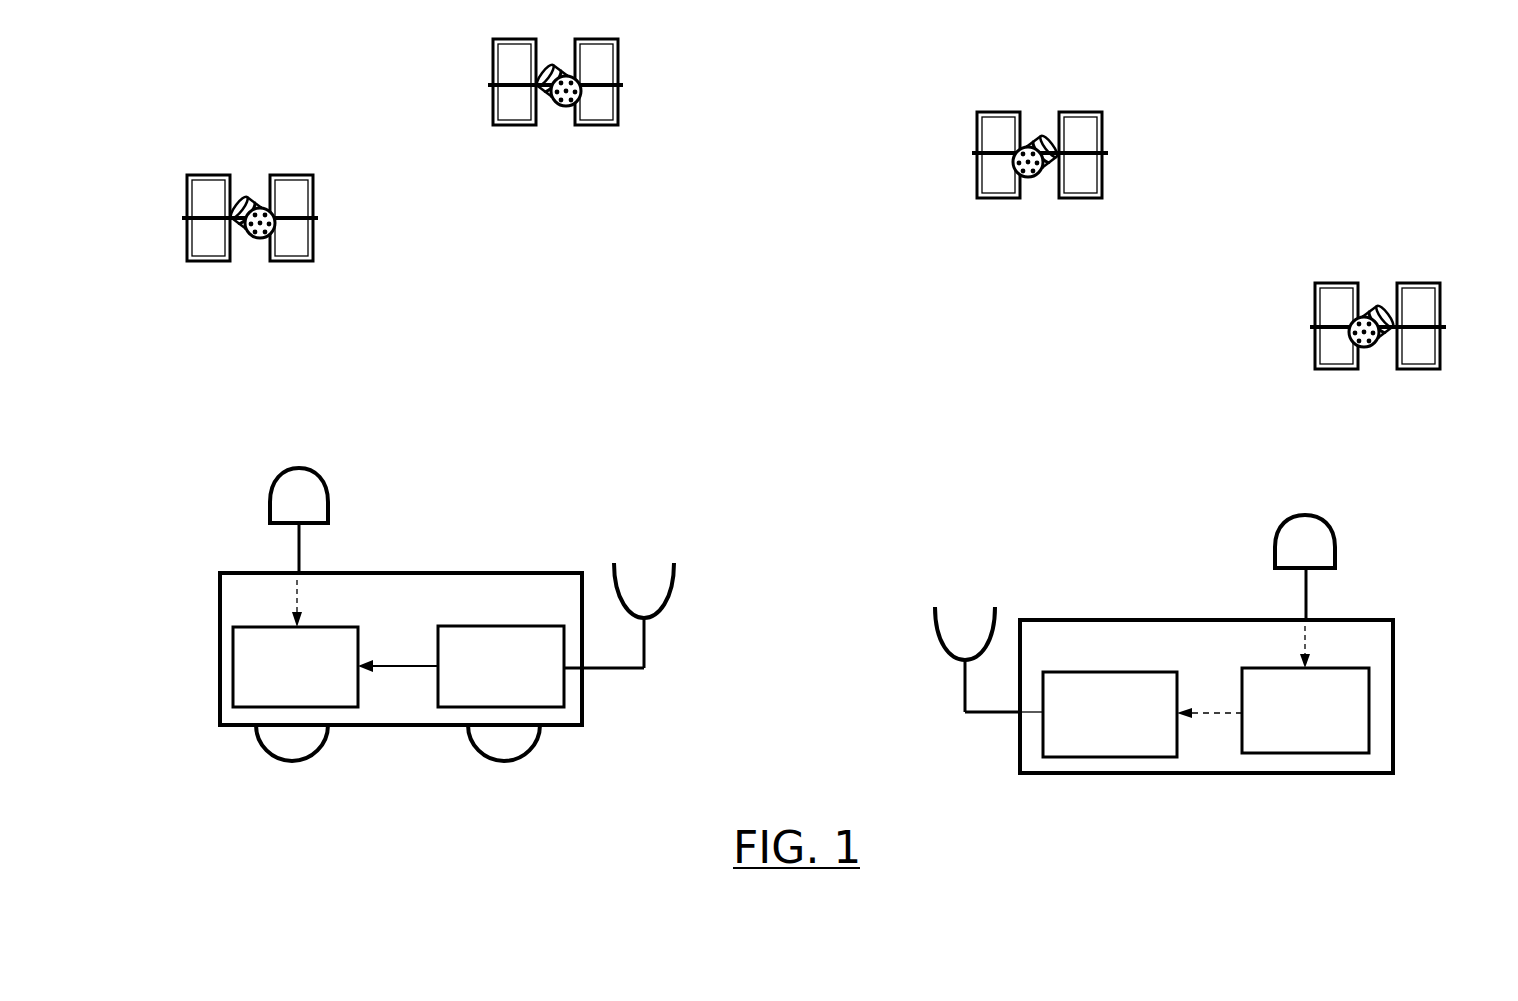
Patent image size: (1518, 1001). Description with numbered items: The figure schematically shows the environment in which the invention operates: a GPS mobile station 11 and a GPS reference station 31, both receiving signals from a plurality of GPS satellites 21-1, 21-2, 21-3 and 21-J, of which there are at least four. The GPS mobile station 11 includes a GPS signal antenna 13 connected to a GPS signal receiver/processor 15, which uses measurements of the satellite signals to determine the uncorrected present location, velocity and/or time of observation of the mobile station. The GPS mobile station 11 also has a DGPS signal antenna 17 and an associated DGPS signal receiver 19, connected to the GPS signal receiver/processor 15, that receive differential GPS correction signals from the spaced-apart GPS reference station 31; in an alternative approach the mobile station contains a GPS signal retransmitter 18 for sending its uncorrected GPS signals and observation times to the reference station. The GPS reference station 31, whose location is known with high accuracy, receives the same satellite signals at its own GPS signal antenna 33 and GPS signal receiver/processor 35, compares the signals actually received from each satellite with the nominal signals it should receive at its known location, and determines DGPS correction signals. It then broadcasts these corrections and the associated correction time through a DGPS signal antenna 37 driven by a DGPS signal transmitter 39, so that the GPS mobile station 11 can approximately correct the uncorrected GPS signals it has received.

The GPS mobile station 11 is at (466, 644).
The GPS signal antenna 13 is at (302, 545).
The GPS signal receiver/processor 15 is at (328, 700).
The DGPS signal antenna 17 is at (675, 608).
The GPS signal retransmitter 18 is at (645, 653).
The DGPS signal receiver 19 is at (550, 697).
The GPS satellite 21-1 is at (255, 245).
The GPS satellite 21-2 is at (563, 107).
The GPS satellite 21-3 is at (1040, 172).
The GPS satellite 21-J is at (1380, 343).
The GPS reference station 31 is at (1223, 677).
The GPS signal antenna 33 is at (1310, 593).
The GPS signal receiver/processor 35 is at (1343, 745).
The DGPS signal antenna 37 is at (977, 715).
The DGPS signal transmitter 39 is at (1165, 755).